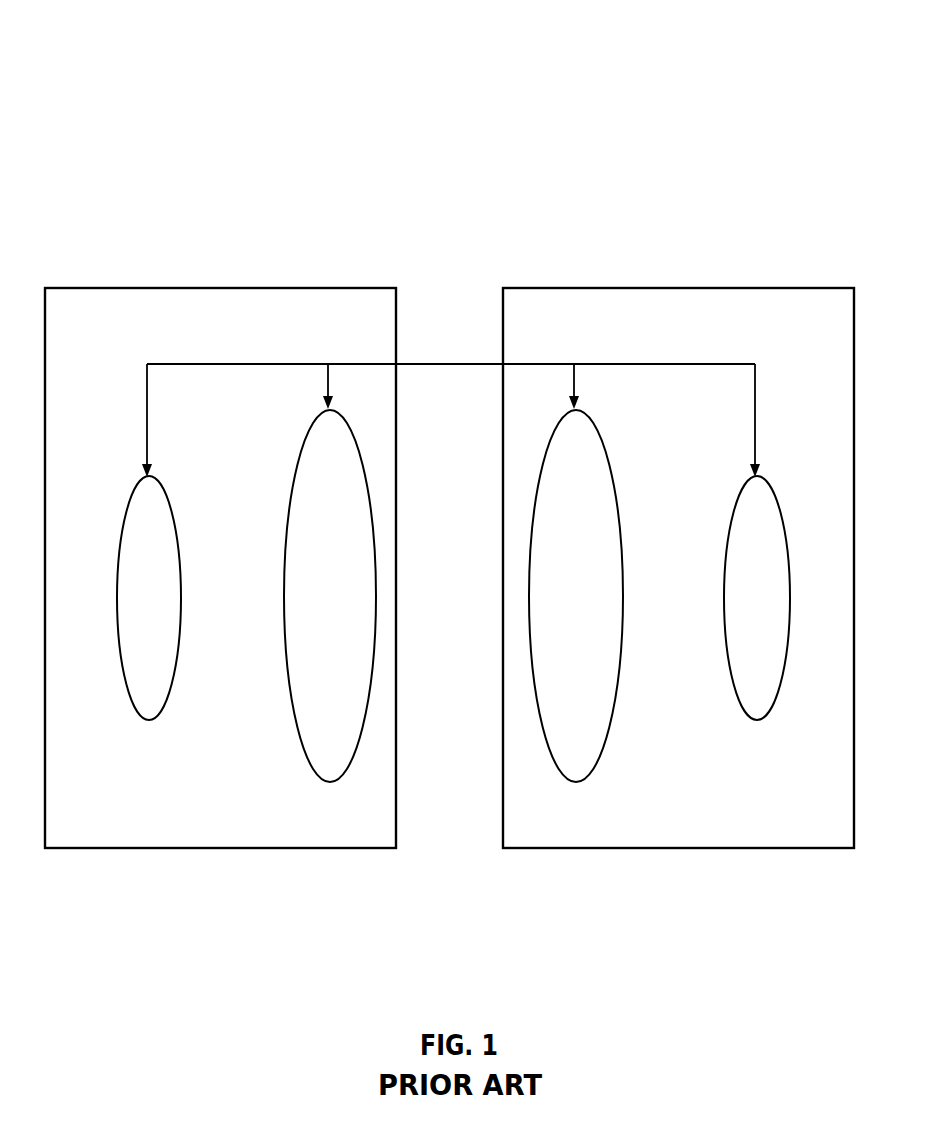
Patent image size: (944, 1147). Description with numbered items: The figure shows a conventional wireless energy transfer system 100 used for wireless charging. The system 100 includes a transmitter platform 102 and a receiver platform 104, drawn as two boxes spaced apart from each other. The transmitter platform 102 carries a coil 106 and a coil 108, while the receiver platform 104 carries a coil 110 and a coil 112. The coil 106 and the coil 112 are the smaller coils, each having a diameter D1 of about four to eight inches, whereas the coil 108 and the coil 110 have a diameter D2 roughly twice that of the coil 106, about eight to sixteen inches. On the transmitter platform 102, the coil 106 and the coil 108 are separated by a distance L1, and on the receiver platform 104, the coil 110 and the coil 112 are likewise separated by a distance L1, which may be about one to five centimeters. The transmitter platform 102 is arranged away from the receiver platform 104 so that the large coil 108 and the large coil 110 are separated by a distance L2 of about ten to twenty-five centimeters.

The wireless energy transfer system 100 is at (667, 107).
The transmitter platform 102 is at (240, 288).
The receiver platform 104 is at (687, 288).
The coil 106 is at (149, 720).
The coil 108 is at (331, 782).
The coil 110 is at (576, 782).
The coil 112 is at (758, 720).